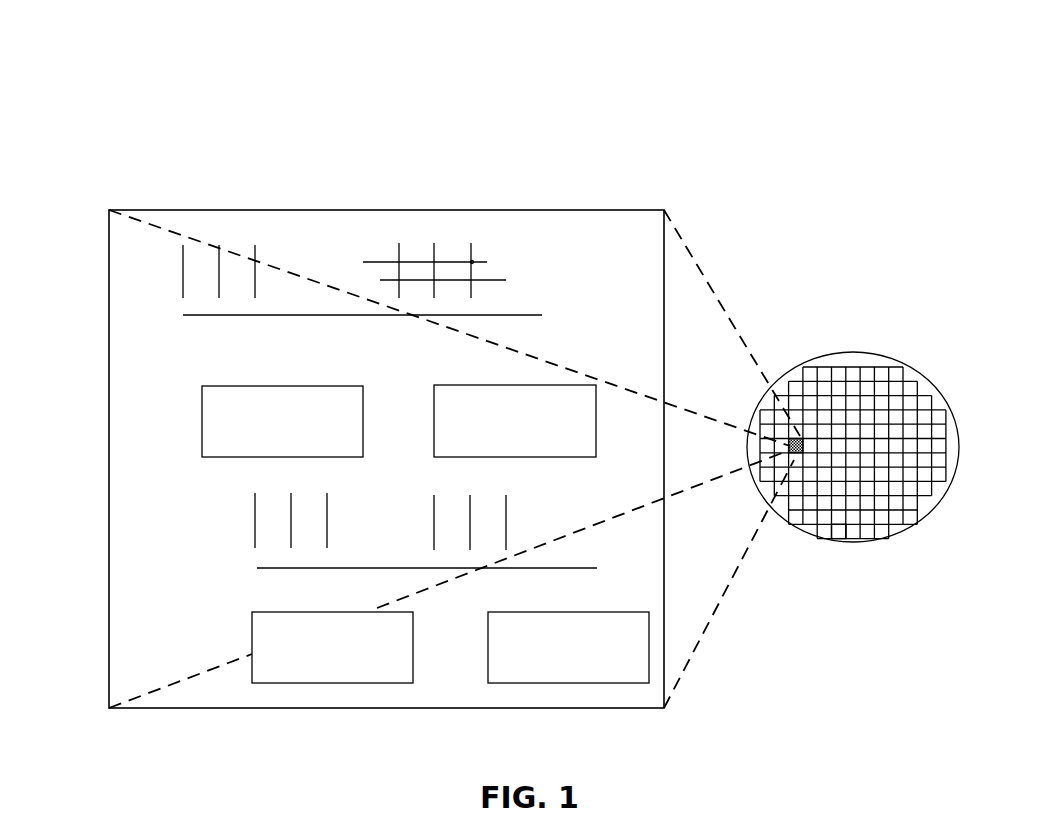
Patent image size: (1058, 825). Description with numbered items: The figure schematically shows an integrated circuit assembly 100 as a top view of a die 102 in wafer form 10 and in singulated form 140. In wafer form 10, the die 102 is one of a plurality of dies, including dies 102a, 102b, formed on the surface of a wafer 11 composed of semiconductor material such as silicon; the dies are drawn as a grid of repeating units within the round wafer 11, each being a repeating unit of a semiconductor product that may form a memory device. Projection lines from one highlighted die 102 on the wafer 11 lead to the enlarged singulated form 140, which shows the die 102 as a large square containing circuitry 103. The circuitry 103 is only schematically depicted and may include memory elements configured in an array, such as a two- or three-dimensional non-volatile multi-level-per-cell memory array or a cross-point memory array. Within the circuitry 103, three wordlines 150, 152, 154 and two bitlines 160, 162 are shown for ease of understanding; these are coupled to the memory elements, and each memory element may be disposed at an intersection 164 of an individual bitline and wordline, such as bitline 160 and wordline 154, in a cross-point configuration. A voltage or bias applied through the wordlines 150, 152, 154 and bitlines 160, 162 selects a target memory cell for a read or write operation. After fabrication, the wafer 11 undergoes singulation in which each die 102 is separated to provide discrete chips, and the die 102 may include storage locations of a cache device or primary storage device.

The integrated circuit assembly 100 is at (770, 58).
The singulated form 140 is at (650, 165).
The die 102 is at (178, 709).
The circuitry 103 is at (257, 568).
The wordline 150 is at (399, 243).
The wordline 152 is at (434, 243).
The wordline 154 is at (471, 243).
The bitline 160 is at (487, 262).
The bitline 162 is at (506, 280).
The intersection 164 is at (472, 262).
The wafer form 10 is at (855, 458).
The wafer 11 is at (877, 353).
The die 102a is at (838, 531).
The die 102b is at (847, 531).